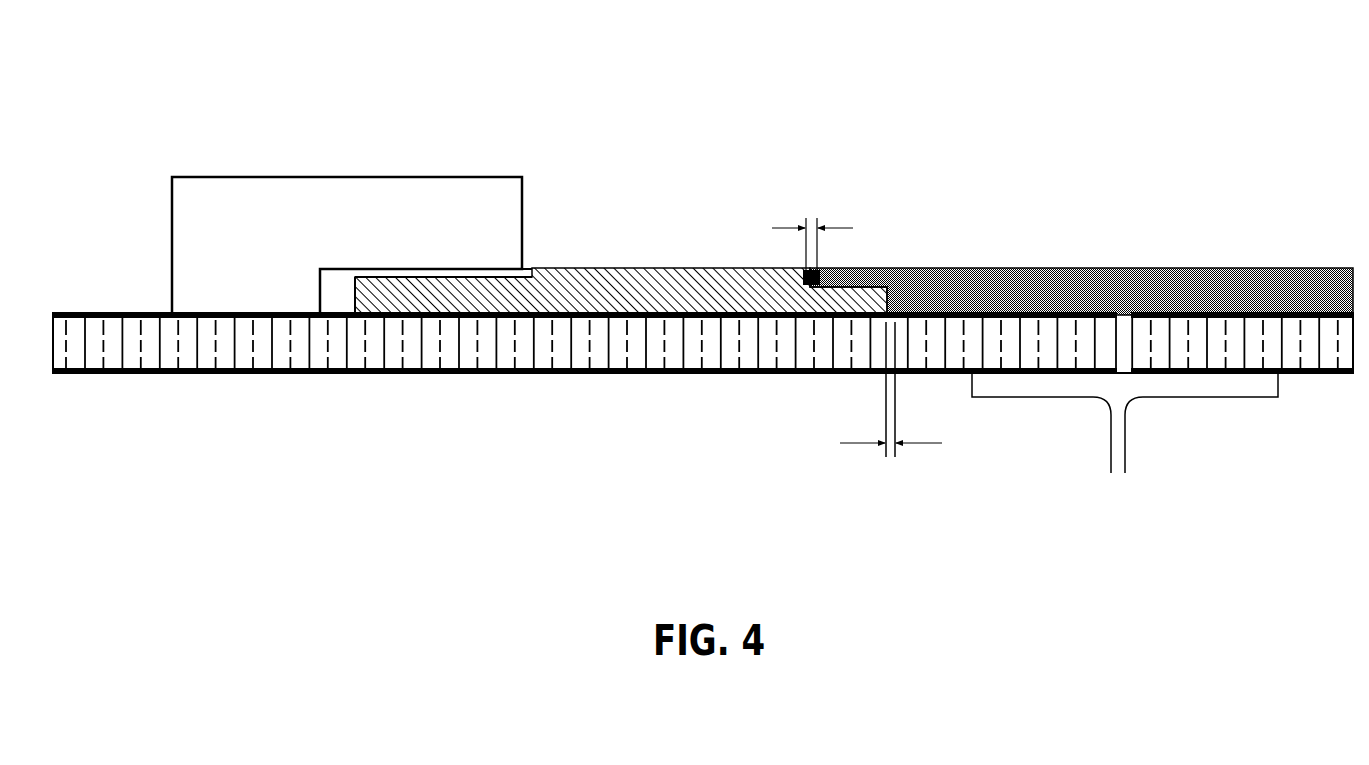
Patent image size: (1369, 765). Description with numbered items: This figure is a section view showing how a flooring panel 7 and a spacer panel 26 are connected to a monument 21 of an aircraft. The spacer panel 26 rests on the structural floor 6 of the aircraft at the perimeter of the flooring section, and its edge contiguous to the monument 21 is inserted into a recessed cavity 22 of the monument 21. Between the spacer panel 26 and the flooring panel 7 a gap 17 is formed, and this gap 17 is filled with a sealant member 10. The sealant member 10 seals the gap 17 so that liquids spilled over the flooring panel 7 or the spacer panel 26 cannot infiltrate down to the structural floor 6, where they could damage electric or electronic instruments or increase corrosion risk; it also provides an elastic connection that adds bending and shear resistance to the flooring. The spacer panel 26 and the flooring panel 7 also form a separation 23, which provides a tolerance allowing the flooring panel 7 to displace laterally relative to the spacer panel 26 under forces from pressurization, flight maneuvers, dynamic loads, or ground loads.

The structural floor 6 is at (100, 311).
The monument 21 is at (222, 174).
The recessed cavity 22 is at (341, 304).
The spacer panel 26 is at (662, 244).
The flooring panel 7 is at (1129, 240).
The gap 17 is at (810, 212).
The sealant member 10 is at (820, 256).
The separation 23 is at (890, 460).